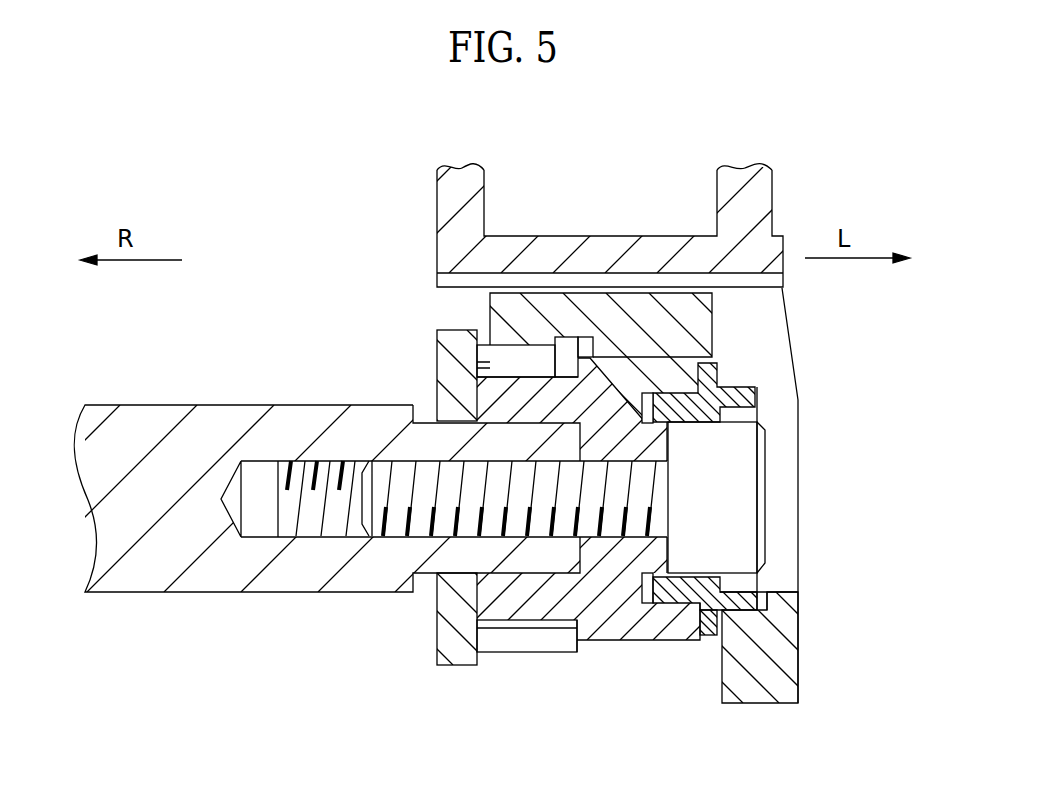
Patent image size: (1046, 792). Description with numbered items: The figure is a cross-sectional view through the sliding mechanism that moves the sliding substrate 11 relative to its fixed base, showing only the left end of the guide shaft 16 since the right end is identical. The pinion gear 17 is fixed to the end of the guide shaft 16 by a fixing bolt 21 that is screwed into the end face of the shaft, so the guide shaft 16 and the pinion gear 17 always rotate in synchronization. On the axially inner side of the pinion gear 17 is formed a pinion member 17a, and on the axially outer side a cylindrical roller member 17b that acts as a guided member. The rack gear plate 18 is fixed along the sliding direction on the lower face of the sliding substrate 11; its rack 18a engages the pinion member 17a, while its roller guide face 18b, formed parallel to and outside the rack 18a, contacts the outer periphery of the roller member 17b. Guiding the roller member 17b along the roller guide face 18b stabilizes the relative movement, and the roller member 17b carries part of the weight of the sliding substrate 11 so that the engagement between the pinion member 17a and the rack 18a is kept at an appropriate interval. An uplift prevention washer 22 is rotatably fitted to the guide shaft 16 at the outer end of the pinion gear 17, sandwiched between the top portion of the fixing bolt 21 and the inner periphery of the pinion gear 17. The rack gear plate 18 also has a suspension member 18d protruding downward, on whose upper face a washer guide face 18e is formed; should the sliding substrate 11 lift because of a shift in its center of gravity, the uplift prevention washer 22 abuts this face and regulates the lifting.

The sliding substrate 11 is at (752, 188).
The guide shaft 16 is at (193, 580).
The pinion gear 17 is at (446, 402).
The pinion member 17a is at (472, 357).
The roller member 17b is at (655, 446).
The rack gear plate 18 is at (787, 380).
The rack 18a is at (495, 340).
The roller guide face 18b is at (665, 368).
The suspension member 18d is at (797, 630).
The washer guide face 18e is at (757, 588).
The fixing bolt 21 is at (733, 488).
The uplift prevention washer 22 is at (708, 632).